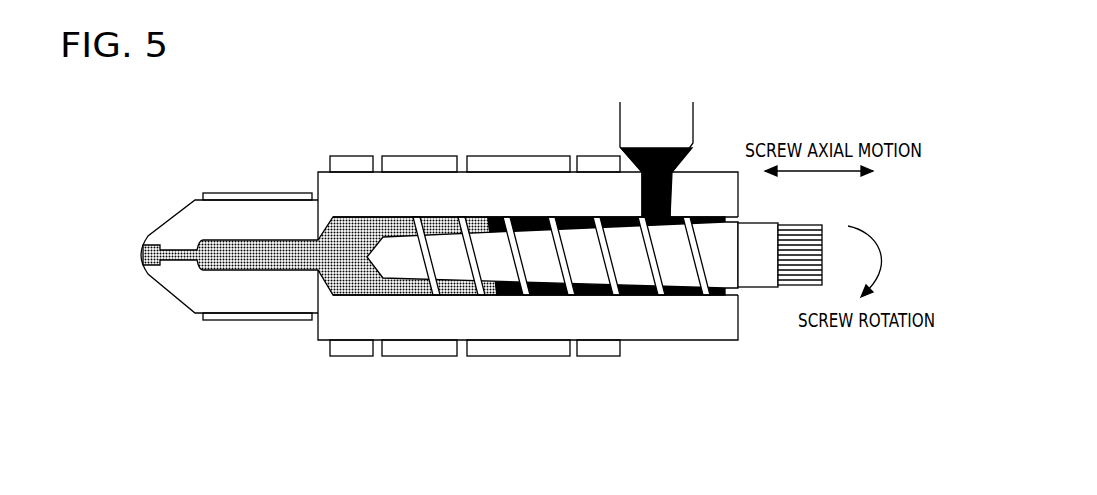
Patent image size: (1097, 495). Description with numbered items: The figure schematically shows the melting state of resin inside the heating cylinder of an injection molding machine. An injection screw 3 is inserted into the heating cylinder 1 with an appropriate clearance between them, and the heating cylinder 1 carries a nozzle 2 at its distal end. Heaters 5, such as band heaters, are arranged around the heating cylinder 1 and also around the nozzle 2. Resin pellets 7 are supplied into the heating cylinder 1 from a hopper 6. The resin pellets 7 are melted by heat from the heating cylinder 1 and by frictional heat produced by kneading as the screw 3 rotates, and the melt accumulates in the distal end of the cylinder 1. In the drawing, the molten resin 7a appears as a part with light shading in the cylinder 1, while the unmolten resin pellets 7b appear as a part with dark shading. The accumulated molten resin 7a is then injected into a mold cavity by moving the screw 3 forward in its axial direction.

The heating cylinder 1 is at (342, 181).
The nozzle 2 is at (192, 213).
The injection screw 3 is at (447, 247).
The heaters 5 is at (230, 197).
The hopper 6 is at (693, 118).
The resin pellets 7 is at (668, 146).
The molten resin 7a is at (373, 283).
The unmolten resin pellets 7b is at (635, 296).